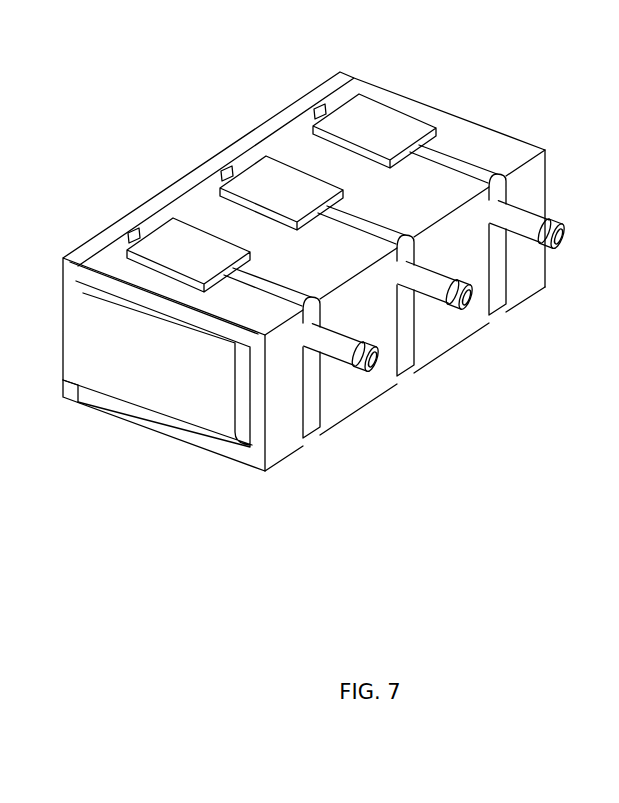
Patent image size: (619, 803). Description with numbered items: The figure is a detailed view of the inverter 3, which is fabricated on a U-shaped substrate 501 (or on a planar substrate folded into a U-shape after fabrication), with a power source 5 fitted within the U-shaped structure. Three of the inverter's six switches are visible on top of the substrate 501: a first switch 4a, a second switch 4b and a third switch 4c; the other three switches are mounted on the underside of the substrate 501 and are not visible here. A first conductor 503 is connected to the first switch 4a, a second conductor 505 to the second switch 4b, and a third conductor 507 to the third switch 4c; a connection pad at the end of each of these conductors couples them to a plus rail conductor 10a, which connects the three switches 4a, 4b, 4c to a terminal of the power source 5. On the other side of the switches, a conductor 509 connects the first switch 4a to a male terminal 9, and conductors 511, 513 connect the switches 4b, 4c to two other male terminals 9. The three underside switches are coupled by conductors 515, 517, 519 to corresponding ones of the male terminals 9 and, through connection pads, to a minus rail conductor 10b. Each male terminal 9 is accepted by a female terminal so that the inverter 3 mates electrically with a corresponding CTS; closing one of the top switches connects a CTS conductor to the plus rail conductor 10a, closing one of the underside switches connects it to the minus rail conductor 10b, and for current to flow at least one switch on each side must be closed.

The inverter 3 is at (445, 385).
The power source 5 is at (157, 370).
The male terminal 9 is at (332, 353).
The plus rail conductor 10a is at (75, 275).
The minus rail conductor 10b is at (70, 392).
The first switch 4a is at (176, 263).
The second switch 4b is at (273, 203).
The third switch 4c is at (365, 139).
The U-shaped substrate 501 is at (352, 400).
The first conductor 503 is at (133, 233).
The second conductor 505 is at (222, 173).
The third conductor 507 is at (320, 112).
The conductor 509 is at (253, 282).
The conductor 511 is at (350, 217).
The conductor 513 is at (453, 160).
The conductor 515 is at (315, 400).
The conductor 517 is at (405, 337).
The conductor 519 is at (498, 275).